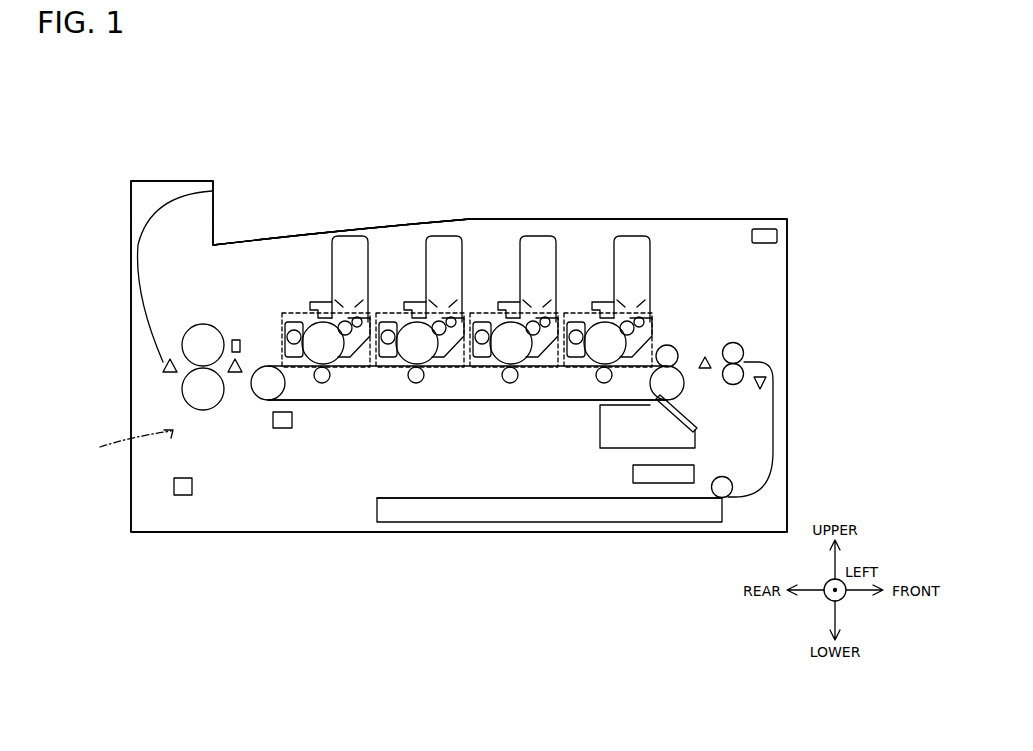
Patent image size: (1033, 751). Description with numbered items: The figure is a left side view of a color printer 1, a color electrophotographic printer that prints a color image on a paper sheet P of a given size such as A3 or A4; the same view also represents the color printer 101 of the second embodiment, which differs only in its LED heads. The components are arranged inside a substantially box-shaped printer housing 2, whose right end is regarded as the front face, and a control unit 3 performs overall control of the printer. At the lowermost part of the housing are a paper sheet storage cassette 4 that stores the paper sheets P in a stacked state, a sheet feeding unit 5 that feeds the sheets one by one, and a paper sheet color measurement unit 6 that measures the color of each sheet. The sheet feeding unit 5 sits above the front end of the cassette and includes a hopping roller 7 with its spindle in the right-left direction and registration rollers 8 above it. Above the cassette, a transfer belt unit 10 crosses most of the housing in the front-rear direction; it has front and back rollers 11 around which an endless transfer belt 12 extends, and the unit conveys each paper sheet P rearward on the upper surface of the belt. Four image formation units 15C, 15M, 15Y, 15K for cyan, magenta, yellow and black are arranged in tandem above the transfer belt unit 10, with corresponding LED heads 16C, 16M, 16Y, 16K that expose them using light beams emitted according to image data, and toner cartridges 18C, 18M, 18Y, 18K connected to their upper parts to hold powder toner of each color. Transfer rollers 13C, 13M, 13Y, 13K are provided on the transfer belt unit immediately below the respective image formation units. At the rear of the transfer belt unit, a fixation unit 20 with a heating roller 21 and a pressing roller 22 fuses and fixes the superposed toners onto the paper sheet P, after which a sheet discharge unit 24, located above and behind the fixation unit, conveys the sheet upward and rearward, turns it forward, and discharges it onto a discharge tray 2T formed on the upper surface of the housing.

The color printer 1 is at (106, 101).
The color printer 101 is at (459, 356).
The printer housing 2 is at (161, 533).
The discharge tray 2T is at (249, 238).
The sheet discharge unit 24 is at (148, 203).
The heating roller 21 is at (188, 344).
The pressing roller 22 is at (192, 395).
The fixation unit 20 is at (125, 448).
The control unit 3 is at (173, 487).
The transfer belt unit 10 is at (379, 448).
The rollers 11 is at (270, 402).
The transfer belt 12 is at (470, 402).
The transfer roller 13C is at (322, 385).
The transfer roller 13M is at (431, 474).
The transfer roller 13Y is at (520, 474).
The transfer roller 13K is at (609, 474).
The image formation unit 15C is at (296, 318).
The image formation unit 15M is at (396, 264).
The image formation unit 15Y is at (486, 265).
The image formation unit 15K is at (582, 264).
The LED head 16C is at (322, 298).
The LED head 16M is at (443, 226).
The LED head 16Y is at (529, 236).
The LED head 16K is at (624, 245).
The toner cartridge 18C is at (352, 234).
The toner cartridge 18M is at (447, 251).
The toner cartridge 18Y is at (539, 253).
The toner cartridge 18K is at (633, 253).
The registration rollers 8 is at (736, 374).
The sheet feeding unit 5 is at (778, 456).
The paper sheet P is at (560, 505).
The paper sheet storage cassette 4 is at (637, 523).
The paper sheet color measurement unit 6 is at (666, 478).
The hopping roller 7 is at (723, 492).